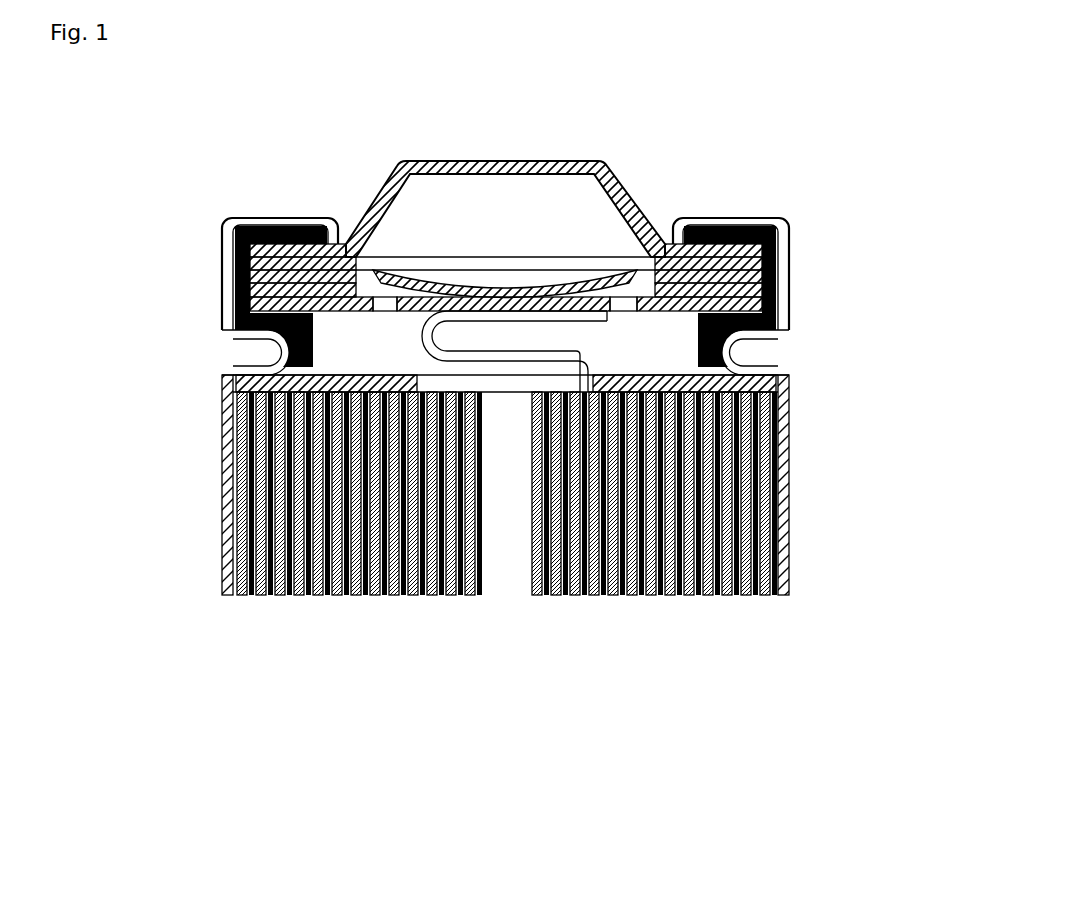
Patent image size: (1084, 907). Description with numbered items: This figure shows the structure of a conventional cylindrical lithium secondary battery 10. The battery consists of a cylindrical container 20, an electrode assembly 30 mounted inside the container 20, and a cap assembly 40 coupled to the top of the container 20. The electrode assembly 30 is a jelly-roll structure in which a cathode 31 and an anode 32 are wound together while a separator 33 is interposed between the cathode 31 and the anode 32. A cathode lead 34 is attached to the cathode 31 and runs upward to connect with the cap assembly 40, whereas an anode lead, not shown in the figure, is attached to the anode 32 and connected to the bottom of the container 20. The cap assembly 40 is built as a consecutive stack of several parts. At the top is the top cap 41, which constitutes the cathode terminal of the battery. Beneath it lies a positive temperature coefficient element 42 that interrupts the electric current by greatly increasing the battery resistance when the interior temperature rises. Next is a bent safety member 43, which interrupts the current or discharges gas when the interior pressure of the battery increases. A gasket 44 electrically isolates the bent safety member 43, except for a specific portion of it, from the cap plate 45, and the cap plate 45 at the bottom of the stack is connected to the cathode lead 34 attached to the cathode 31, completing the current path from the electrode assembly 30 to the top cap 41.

The secondary battery 10 is at (192, 184).
The cylindrical container 20 is at (783, 577).
The electrode assembly 30 is at (652, 722).
The cathode 31 is at (630, 593).
The anode 32 is at (430, 595).
The separator 33 is at (473, 595).
The cathode lead 34 is at (222, 517).
The cap assembly 40 is at (838, 152).
The top cap 41 is at (548, 158).
The positive temperature coefficient (PTC) element 42 is at (387, 250).
The bent safety member 43 is at (230, 262).
The gasket 44 is at (780, 310).
The cap plate 45 is at (427, 344).